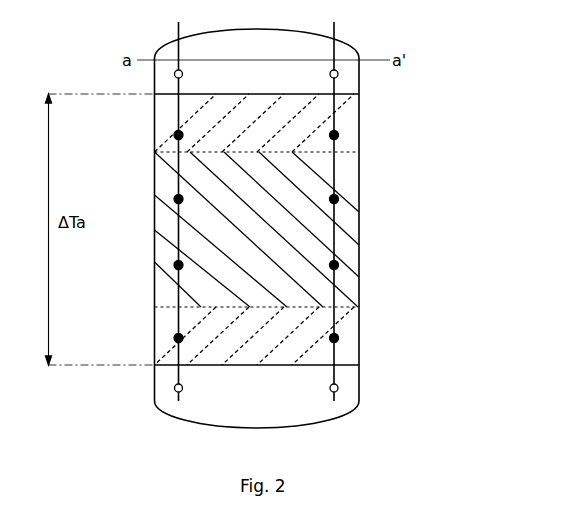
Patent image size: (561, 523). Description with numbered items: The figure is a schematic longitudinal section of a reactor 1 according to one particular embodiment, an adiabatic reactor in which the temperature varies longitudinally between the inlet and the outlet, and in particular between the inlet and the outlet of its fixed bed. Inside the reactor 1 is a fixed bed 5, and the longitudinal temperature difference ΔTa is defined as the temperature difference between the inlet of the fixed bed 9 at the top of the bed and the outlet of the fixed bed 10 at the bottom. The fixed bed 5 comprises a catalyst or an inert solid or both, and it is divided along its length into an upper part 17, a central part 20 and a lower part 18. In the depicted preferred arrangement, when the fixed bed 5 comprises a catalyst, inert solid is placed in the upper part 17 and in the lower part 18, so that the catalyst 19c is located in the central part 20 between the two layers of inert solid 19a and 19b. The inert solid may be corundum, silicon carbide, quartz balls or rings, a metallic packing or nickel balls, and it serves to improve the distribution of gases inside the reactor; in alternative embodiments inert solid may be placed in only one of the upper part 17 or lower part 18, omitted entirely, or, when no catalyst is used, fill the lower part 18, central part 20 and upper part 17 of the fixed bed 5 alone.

The reactor 1 is at (459, 101).
The fixed bed 5 is at (147, 202).
The inlet of the fixed bed 9 is at (349, 94).
The outlet of the fixed bed 10 is at (349, 366).
The upper part of the fixed bed 17 is at (368, 122).
The lower part of the fixed bed 18 is at (368, 335).
The layer of inert solid 19a is at (168, 326).
The layer of inert solid 19b is at (168, 120).
The catalyst 19c is at (354, 182).
The central part of the fixed bed 20 is at (368, 228).